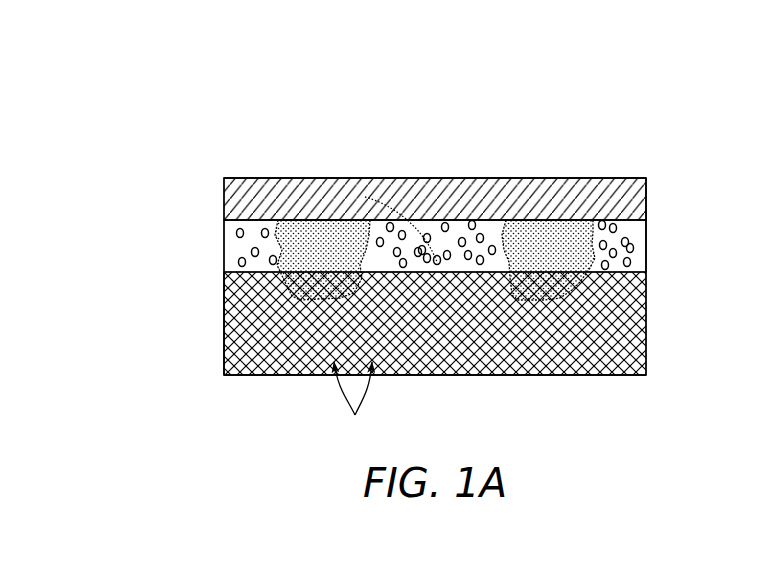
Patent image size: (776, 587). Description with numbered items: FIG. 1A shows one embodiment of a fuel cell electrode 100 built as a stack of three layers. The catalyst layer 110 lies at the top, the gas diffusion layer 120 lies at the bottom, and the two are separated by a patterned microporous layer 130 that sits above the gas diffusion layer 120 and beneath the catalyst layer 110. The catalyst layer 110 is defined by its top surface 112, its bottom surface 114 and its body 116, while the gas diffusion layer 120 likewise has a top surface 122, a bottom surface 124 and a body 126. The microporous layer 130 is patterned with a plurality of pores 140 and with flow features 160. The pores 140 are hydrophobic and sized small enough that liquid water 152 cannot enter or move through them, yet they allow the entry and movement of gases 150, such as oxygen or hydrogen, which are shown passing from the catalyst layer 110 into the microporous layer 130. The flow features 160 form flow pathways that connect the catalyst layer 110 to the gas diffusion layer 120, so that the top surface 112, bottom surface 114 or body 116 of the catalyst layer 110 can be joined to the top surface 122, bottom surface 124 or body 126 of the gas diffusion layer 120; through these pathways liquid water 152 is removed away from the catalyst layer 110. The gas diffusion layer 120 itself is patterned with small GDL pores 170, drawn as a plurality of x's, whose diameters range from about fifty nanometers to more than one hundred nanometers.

The fuel cell electrode 100 is at (492, 133).
The catalyst layer 110 is at (221, 177).
The top surface of the catalyst layer 112 is at (337, 177).
The bottom surface of the catalyst layer 114 is at (222, 219).
The body of the catalyst layer 116 is at (650, 183).
The gas diffusion layer 120 is at (214, 310).
The top surface of the gas diffusion layer 122 is at (648, 271).
The bottom surface of the gas diffusion layer 124 is at (261, 377).
The body of the gas diffusion layer 126 is at (221, 333).
The patterned microporous layer 130 is at (221, 265).
The pores 140 is at (622, 228).
The gases 150 is at (411, 209).
The liquid water 152 is at (562, 280).
The flow features 160 is at (548, 275).
The GDL pores 170 is at (355, 401).